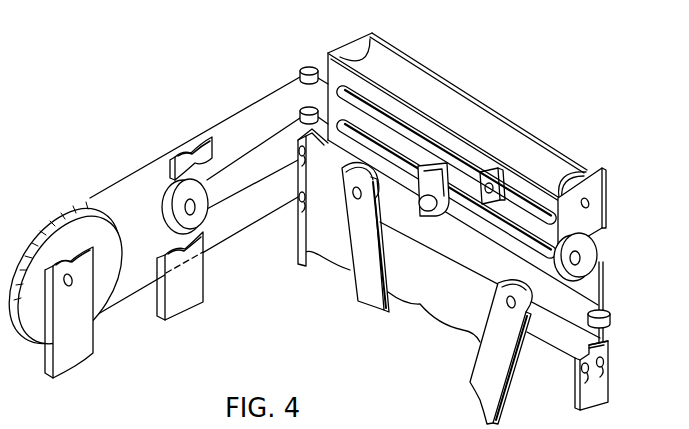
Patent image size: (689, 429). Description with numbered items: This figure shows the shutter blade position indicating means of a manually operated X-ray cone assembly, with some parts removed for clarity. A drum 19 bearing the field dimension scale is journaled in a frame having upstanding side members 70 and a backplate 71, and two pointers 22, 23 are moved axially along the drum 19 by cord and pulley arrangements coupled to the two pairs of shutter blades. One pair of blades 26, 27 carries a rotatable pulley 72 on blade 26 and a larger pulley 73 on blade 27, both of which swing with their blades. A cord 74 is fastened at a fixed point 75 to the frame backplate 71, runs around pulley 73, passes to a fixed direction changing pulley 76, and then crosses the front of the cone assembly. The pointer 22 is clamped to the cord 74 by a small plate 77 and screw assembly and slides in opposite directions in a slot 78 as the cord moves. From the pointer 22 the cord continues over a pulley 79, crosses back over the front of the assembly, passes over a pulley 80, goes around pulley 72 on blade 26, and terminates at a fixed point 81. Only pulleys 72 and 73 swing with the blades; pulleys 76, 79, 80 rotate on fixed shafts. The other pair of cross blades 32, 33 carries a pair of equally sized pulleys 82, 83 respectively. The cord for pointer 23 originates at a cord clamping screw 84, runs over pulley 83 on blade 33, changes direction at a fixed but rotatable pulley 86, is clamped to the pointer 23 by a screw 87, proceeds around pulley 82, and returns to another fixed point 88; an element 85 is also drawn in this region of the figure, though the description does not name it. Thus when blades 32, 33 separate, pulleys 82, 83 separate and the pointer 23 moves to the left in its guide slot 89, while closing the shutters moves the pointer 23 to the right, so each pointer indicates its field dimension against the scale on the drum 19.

The drum 19 is at (436, 75).
The pointer 22 is at (498, 154).
The pointer 23 is at (432, 146).
The shutter blade 26 is at (198, 306).
The shutter blade 27 is at (62, 377).
The cross blade 32 is at (374, 259).
The cross blade 33 is at (483, 342).
The upstanding side member 70 is at (366, 33).
The backplate 71 is at (327, 61).
The rotatable pulley 72 is at (208, 192).
The larger pulley 73 is at (113, 258).
The cord 74 is at (255, 233).
The fixed point 75 is at (298, 209).
The fixed direction changing pulley 76 is at (300, 68).
The small plate 77 is at (470, 226).
The slot 78 is at (557, 201).
The pulley 79 is at (596, 250).
The pulley 80 is at (300, 106).
The fixed point 81 is at (298, 170).
The pulley 82 is at (377, 197).
The pulley 83 is at (527, 272).
The cord clamping screw 84 is at (594, 378).
The rod 85 is at (548, 338).
The fixed rotatable pulley 86 is at (611, 316).
The screw 87 is at (420, 215).
The fixed point 88 is at (611, 352).
The guide slot 89 is at (370, 156).